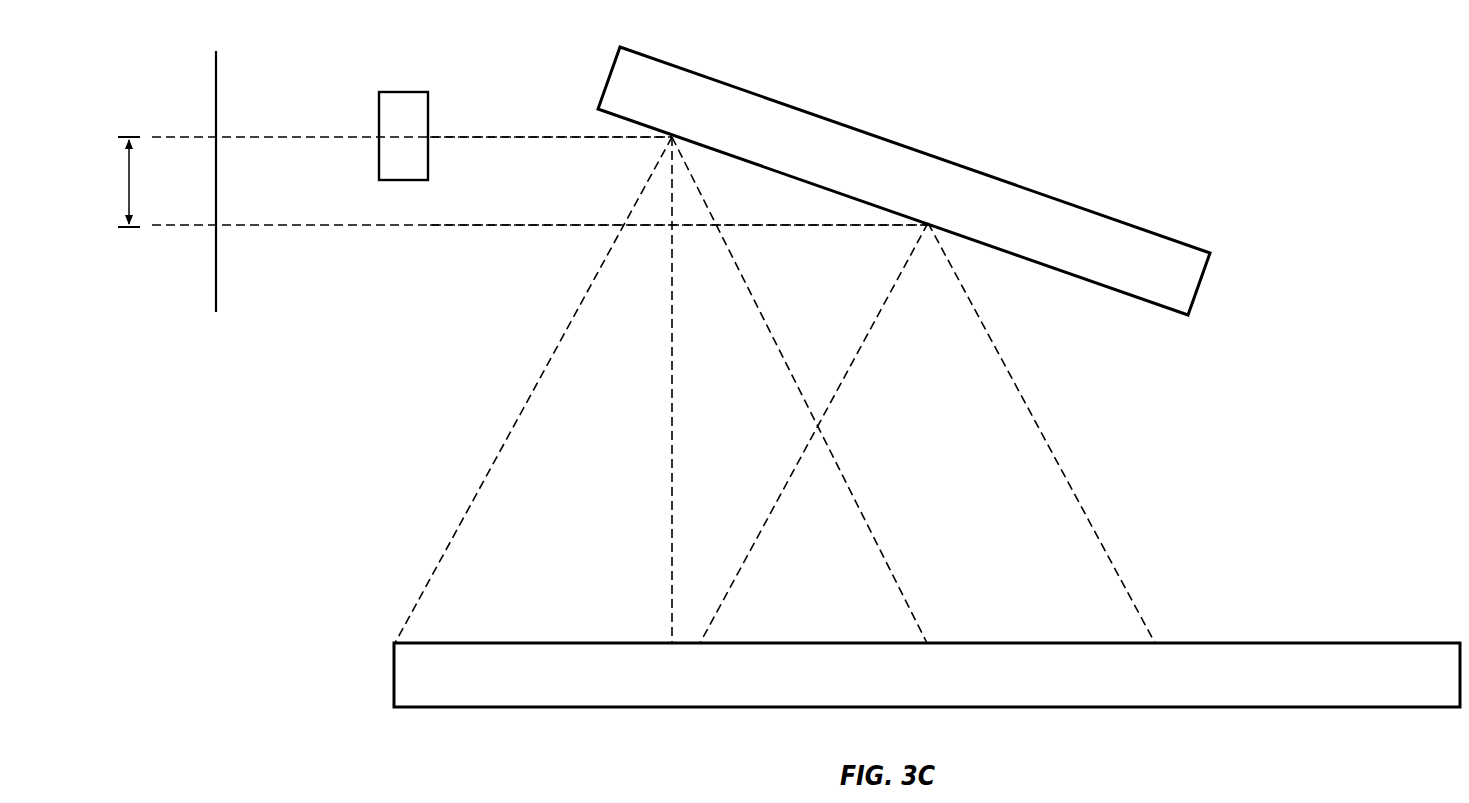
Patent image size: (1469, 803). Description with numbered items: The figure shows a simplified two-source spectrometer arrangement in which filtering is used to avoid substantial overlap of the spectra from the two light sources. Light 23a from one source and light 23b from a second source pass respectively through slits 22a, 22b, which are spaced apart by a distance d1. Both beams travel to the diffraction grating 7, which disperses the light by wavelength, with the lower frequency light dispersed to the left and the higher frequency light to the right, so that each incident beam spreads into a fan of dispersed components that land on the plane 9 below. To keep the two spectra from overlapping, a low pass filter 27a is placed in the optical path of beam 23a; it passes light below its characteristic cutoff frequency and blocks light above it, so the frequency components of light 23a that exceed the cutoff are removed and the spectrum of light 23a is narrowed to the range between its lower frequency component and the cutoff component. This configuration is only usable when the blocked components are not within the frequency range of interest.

The diffraction grating 7 is at (904, 181).
The substrate / detection plane 9 is at (1388, 686).
The slit 22a is at (229, 126).
The slit 22b is at (229, 244).
The light from first source 23a is at (551, 105).
The light from second source 23b is at (679, 194).
The low pass filter 27a is at (433, 110).
The slit spacing distance d1 is at (134, 182).